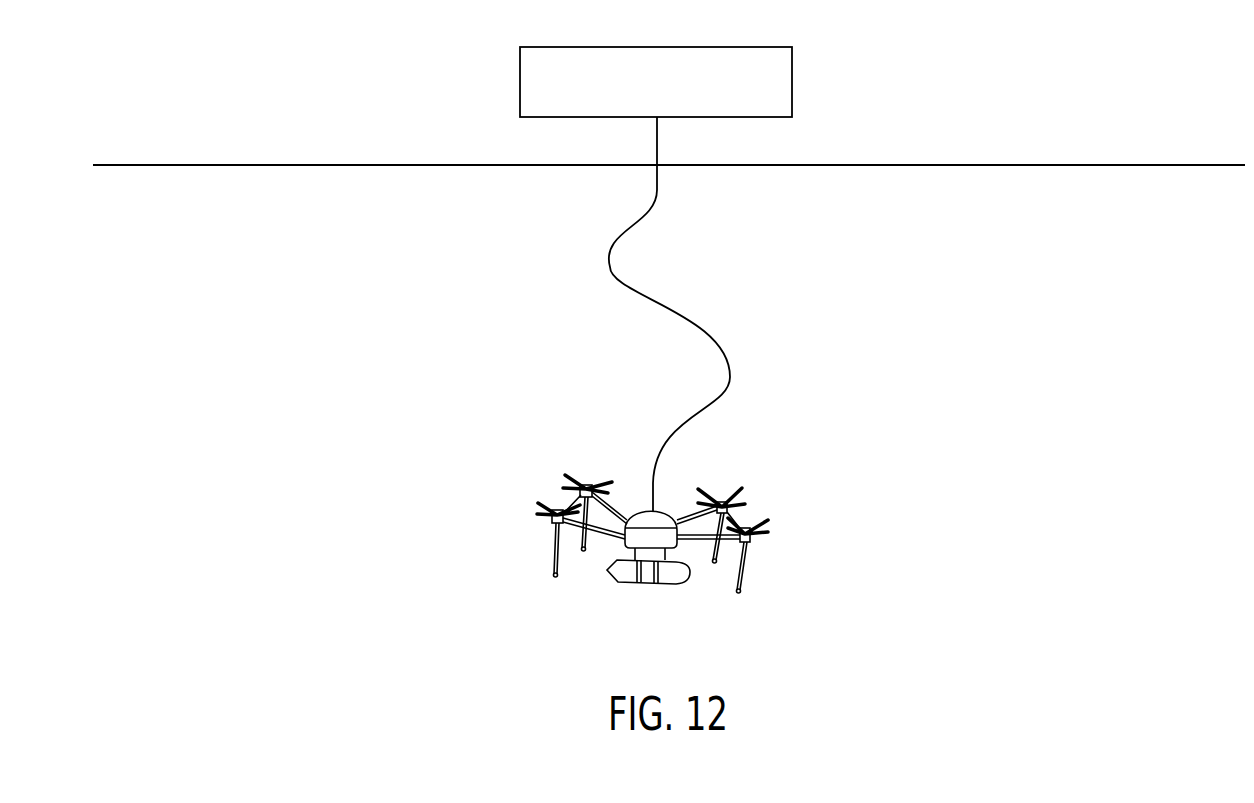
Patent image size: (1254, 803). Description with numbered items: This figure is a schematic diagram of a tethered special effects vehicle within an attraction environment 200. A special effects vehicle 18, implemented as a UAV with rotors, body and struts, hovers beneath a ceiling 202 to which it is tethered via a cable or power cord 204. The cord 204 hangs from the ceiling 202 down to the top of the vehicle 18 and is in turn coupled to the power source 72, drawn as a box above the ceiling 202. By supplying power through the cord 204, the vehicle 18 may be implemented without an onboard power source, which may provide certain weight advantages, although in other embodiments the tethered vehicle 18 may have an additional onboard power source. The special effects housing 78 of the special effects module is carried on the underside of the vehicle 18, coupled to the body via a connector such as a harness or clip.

The attraction environment 200 is at (927, 328).
The ceiling 202 is at (233, 165).
The power source 72 is at (520, 82).
The power cord 204 is at (703, 323).
The special effects vehicle 18 is at (697, 550).
The special effects housing 78 is at (618, 580).